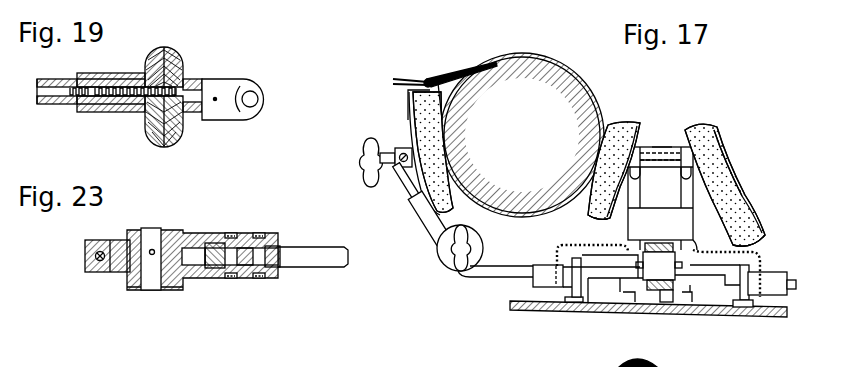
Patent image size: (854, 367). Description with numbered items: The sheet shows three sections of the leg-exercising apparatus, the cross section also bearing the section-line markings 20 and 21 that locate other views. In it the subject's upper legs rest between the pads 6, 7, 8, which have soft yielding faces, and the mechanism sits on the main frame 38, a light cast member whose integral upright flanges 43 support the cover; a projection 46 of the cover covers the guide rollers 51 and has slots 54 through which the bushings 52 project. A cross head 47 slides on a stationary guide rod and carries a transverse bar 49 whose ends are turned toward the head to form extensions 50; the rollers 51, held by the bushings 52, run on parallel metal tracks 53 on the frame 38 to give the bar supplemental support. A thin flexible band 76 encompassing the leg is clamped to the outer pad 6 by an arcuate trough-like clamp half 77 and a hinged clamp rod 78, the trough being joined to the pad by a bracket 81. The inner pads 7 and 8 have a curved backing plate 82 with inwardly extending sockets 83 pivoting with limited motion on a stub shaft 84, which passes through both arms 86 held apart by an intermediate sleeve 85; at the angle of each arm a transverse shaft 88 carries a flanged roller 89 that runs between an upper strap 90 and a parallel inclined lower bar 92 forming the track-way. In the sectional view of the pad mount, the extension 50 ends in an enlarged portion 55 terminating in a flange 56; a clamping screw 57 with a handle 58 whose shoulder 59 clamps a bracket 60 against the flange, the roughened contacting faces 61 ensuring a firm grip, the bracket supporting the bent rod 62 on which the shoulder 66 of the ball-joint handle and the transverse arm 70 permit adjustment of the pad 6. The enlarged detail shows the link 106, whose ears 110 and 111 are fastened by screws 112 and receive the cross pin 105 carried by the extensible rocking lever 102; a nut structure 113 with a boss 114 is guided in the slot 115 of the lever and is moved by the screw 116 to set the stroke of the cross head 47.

In FIG. 19, the extension 50 is at (55, 112).
In FIG. 19, the enlarged portion 55 is at (93, 111).
In FIG. 19, the flange 56 is at (151, 140).
In FIG. 19, the clamping screw 57 is at (128, 86).
In FIG. 19, the handle 58 is at (256, 92).
In FIG. 17, the handle 58 is at (454, 270).
In FIG. 19, the shoulder 59 is at (207, 80).
In FIG. 19, the bracket 60 is at (182, 138).
In FIG. 17, the bracket 60 is at (444, 261).
In FIG. 19, the contacting faces 61 is at (156, 47).
In FIG. 23, the rocking lever 102 is at (192, 268).
In FIG. 23, the cross pin 105 is at (155, 240).
In FIG. 23, the link 106 is at (318, 268).
In FIG. 23, the ear 110 is at (198, 232).
In FIG. 23, the ear 111 is at (182, 290).
In FIG. 23, the screws 112 is at (258, 233).
In FIG. 23, the nut structure 113 is at (108, 273).
In FIG. 23, the boss 114 is at (146, 230).
In FIG. 23, the slot 115 is at (187, 256).
In FIG. 23, the screw 116 is at (88, 258).
In FIG. 17, the pad 6 is at (435, 210).
In FIG. 17, the pad 7 is at (633, 123).
In FIG. 17, the pad 8 is at (708, 128).
In FIG. 17, the section line 20 is at (448, 50).
In FIG. 17, the section line 21 is at (353, 165).
In FIG. 17, the main frame 38 is at (752, 315).
In FIG. 17, the upright flanges 43 is at (692, 318).
In FIG. 17, the projection 46 is at (708, 256).
In FIG. 17, the cross head 47 is at (606, 284).
In FIG. 17, the bar 49 is at (503, 278).
In FIG. 17, the rollers 51 is at (560, 300).
In FIG. 17, the bushings 52 is at (538, 286).
In FIG. 17, the tracks 53 is at (581, 305).
In FIG. 17, the slots 54 is at (548, 262).
In FIG. 17, the bent rod 62 is at (404, 200).
In FIG. 17, the shoulder 66 is at (366, 142).
In FIG. 17, the arm 70 is at (389, 150).
In FIG. 17, the band 76 is at (563, 63).
In FIG. 17, the arcuate clamp half 77 is at (438, 90).
In FIG. 17, the clamp rod 78 is at (432, 78).
In FIG. 17, the bracket 81 is at (411, 101).
In FIG. 17, the backing plate 82 is at (592, 218).
In FIG. 17, the sockets 83 is at (695, 161).
In FIG. 17, the stub shaft 84 is at (668, 158).
In FIG. 17, the intermediate sleeve 85 is at (661, 147).
In FIG. 17, the arms 86 is at (679, 203).
In FIG. 17, the transverse shaft 88 is at (697, 249).
In FIG. 17, the flanged roller 89 is at (678, 278).
In FIG. 17, the strap 90 is at (674, 229).
In FIG. 17, the bar 92 is at (662, 303).